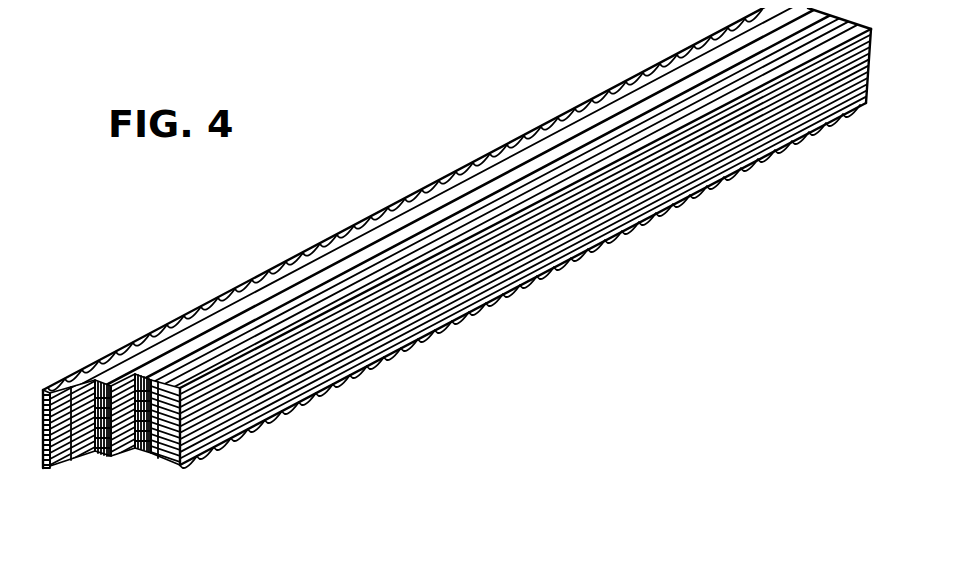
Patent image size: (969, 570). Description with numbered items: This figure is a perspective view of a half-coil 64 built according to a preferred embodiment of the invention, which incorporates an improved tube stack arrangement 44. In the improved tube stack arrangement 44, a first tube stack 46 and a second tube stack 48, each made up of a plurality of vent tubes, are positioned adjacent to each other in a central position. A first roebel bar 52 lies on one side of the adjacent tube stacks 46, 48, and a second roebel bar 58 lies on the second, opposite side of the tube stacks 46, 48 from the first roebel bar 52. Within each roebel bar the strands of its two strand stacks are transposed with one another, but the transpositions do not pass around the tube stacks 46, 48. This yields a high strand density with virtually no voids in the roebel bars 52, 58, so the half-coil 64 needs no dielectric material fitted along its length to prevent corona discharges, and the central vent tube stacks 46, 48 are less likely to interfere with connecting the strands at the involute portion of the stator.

The improved tube stack arrangement 44 is at (190, 282).
The first tube stack 46 is at (117, 443).
The second tube stack 48 is at (146, 443).
The first roebel bar 52 is at (313, 243).
The second roebel bar 58 is at (577, 240).
The half-coil 64 is at (478, 377).